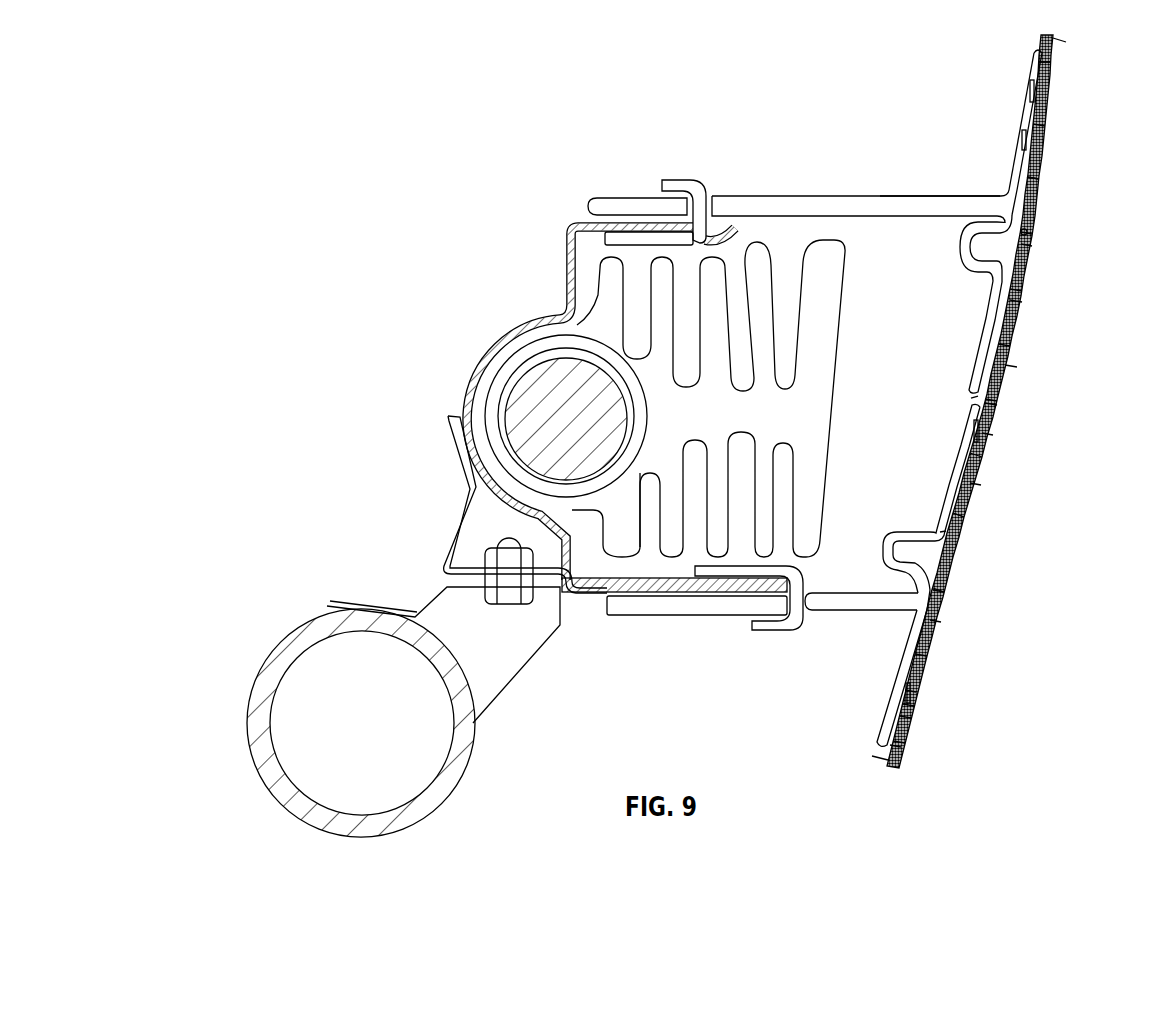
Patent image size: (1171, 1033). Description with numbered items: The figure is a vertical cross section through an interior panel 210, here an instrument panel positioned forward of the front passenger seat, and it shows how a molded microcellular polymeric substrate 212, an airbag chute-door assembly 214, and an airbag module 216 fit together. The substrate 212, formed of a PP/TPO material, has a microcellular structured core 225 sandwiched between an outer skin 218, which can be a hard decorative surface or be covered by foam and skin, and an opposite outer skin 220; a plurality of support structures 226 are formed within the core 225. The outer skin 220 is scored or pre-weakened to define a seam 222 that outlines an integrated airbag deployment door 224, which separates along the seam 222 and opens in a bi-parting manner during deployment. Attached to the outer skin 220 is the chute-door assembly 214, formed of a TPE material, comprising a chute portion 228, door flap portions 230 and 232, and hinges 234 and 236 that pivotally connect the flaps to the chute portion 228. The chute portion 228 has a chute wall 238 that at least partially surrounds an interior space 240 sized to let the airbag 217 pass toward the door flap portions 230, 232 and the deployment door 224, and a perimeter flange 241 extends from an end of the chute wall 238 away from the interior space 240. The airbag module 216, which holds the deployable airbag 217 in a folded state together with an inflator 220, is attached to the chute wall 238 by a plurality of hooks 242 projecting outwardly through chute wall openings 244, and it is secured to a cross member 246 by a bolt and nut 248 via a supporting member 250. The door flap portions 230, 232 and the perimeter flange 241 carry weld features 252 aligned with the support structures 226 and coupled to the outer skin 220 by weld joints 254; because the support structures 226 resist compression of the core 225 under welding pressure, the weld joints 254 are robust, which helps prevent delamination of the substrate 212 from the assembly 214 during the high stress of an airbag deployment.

The interior panel 210 is at (347, 132).
The molded microcellular polymeric substrate 212 is at (937, 650).
The airbag chute-door assembly 214 is at (850, 608).
The airbag module 216 is at (498, 334).
The deployable airbag 217 is at (838, 375).
The outer skin 218 is at (978, 502).
The outer skin 220 is at (500, 417).
The seam 222 is at (1030, 245).
The integrated airbag deployment door 224 is at (1012, 365).
The microcellular structured core 225 is at (1046, 186).
The support structures 226 is at (1048, 66).
The chute portion 228 is at (928, 198).
The door flap portion 230 is at (985, 345).
The door flap portion 232 is at (937, 500).
The hinge 234 is at (958, 247).
The hinge 236 is at (886, 548).
The chute wall 238 is at (835, 198).
The interior space 240 is at (879, 447).
The perimeter flange 241 is at (1023, 100).
The hooks 242 is at (675, 180).
The chute wall openings 244 is at (708, 188).
The cross member 246 is at (282, 645).
The bolt and nut 248 is at (508, 612).
The supporting member 250 is at (453, 522).
The weld features 252 is at (1022, 124).
The weld joints 254 is at (1048, 118).